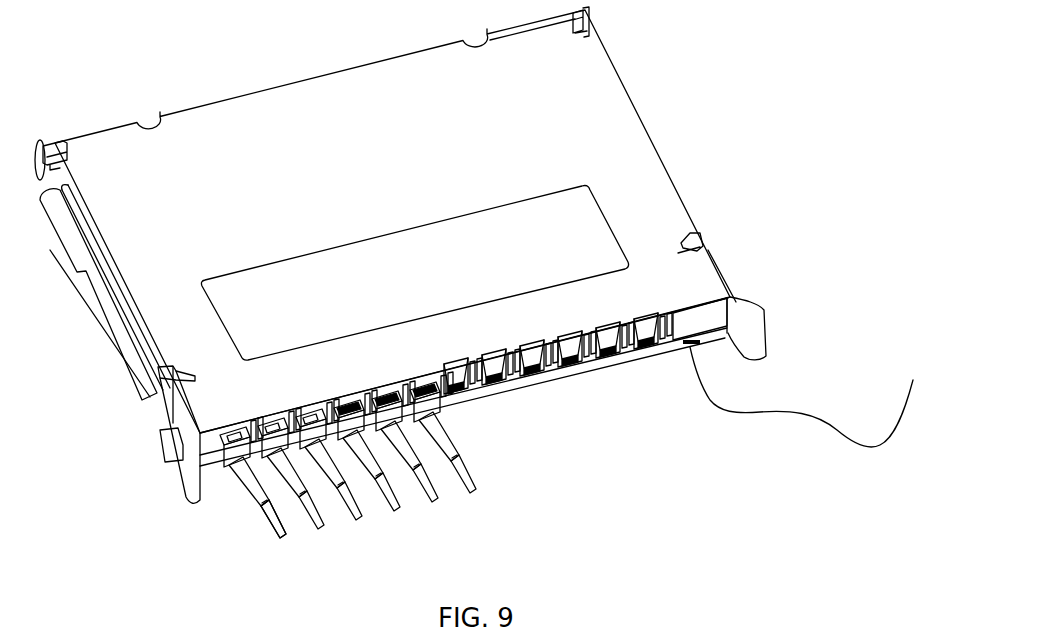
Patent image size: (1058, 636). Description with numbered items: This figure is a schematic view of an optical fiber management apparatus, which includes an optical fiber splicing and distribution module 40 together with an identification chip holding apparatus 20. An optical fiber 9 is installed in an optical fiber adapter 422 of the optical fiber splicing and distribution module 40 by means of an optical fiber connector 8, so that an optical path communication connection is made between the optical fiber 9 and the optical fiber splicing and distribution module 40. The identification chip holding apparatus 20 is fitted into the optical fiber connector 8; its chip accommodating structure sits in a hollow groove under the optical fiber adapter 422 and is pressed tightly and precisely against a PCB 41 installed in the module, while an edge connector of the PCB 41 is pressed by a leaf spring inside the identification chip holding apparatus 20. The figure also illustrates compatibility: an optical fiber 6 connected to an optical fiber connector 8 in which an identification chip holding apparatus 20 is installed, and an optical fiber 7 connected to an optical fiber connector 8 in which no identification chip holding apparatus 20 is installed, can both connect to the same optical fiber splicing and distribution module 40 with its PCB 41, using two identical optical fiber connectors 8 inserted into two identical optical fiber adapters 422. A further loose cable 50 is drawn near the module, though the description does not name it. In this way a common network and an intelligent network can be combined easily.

The optical fiber splicing and distribution module 40 is at (625, 127).
The PCB 41 is at (700, 320).
The optical fiber adapter 422 is at (527, 360).
The identification chip holding apparatus 20 is at (233, 452).
The optical fiber 9 is at (283, 534).
The optical fiber 6 is at (360, 518).
The optical fiber 7 is at (435, 498).
The optical fiber connector 8 is at (428, 398).
The optical cable 50 is at (690, 347).